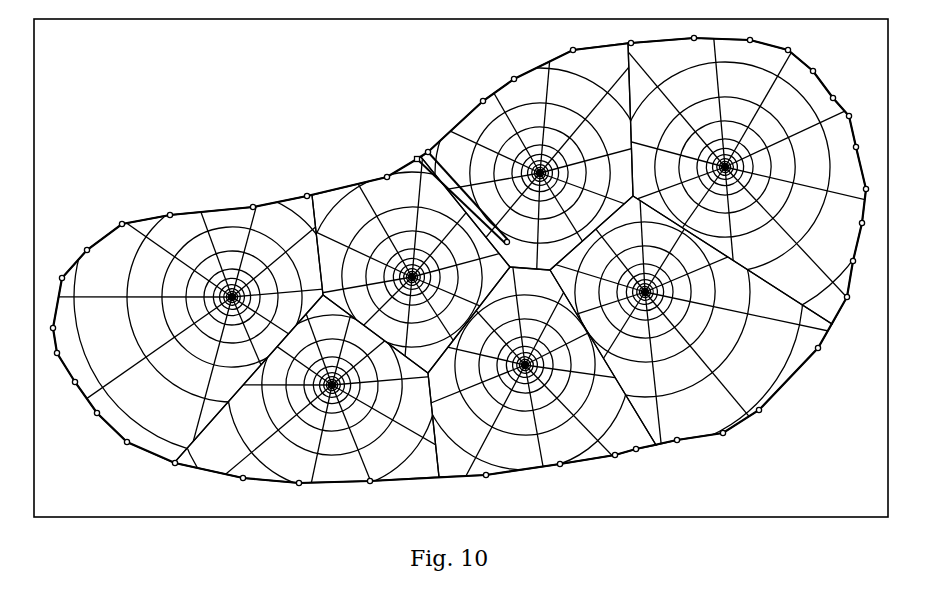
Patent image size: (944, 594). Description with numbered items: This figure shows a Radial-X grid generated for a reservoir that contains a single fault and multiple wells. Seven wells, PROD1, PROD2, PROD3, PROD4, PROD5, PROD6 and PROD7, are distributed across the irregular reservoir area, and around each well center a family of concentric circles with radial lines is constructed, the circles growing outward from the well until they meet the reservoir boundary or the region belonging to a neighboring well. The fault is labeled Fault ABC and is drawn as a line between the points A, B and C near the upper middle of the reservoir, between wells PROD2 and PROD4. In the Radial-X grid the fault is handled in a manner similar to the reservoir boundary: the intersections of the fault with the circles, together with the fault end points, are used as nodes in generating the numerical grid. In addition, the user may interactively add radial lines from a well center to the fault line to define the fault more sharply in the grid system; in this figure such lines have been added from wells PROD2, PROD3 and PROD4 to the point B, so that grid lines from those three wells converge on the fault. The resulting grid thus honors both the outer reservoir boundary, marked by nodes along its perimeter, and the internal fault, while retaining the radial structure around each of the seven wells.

The well PROD1 is at (332, 297).
The well PROD2 is at (490, 297).
The well PROD3 is at (511, 297).
The well PROD4 is at (448, 297).
The well PROD5 is at (560, 297).
The well PROD6 is at (572, 297).
The well PROD7 is at (435, 297).
The fault end point A is at (409, 162).
The fault point B is at (469, 206).
The fault end point C is at (423, 145).